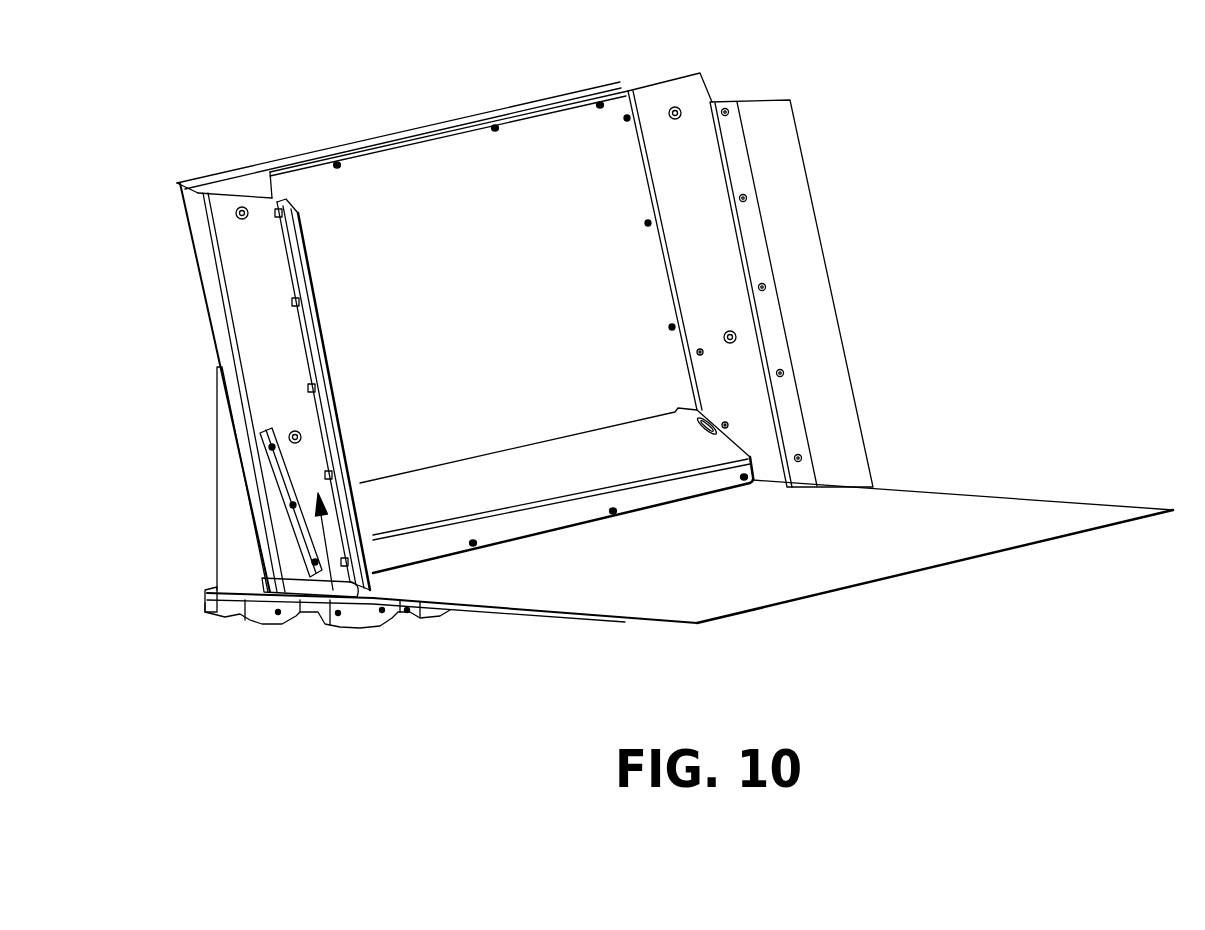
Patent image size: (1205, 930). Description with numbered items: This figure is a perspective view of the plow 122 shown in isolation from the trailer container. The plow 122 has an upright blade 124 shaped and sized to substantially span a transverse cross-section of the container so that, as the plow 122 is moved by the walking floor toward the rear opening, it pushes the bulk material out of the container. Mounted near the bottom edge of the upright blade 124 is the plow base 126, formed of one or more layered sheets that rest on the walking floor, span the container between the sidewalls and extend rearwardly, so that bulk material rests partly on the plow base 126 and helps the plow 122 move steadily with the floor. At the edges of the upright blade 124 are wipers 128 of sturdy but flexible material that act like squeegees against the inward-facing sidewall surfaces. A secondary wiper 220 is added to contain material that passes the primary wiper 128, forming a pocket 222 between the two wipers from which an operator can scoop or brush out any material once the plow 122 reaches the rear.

The plow 122 is at (645, 372).
The upright blade 124 is at (433, 180).
The plow base 126 is at (812, 567).
The wiper 128 is at (797, 268).
The secondary wiper 220 is at (285, 474).
The pocket 222 is at (345, 585).